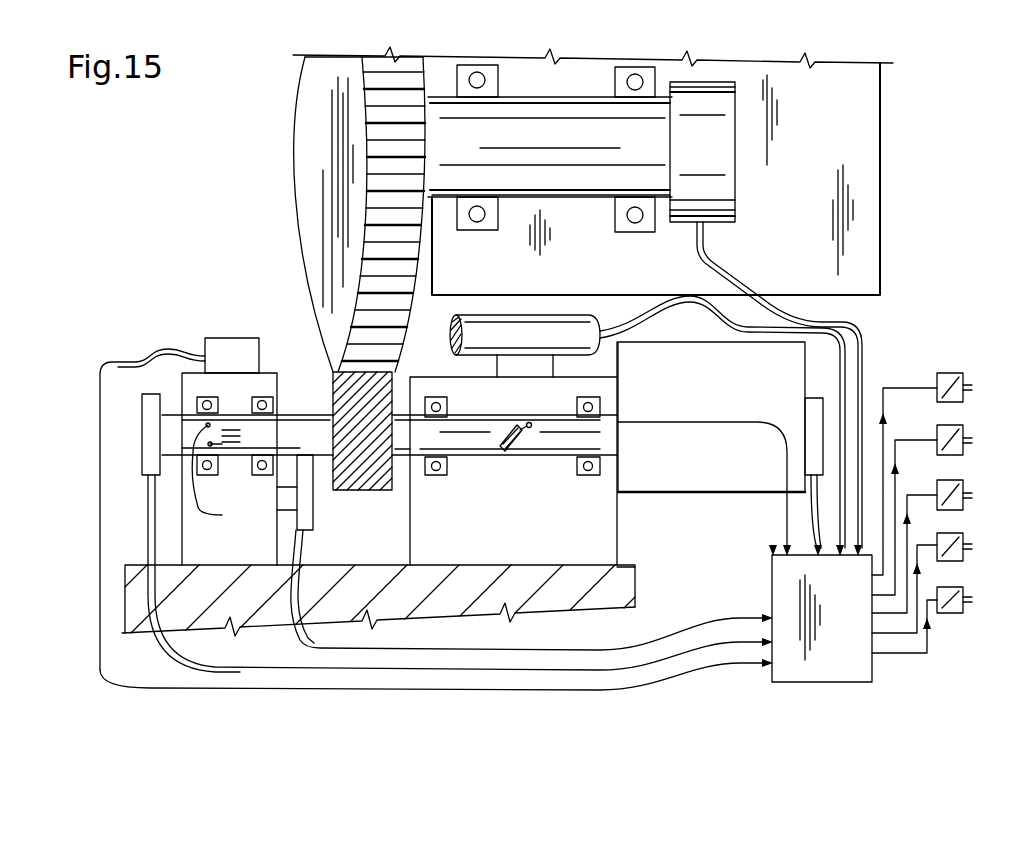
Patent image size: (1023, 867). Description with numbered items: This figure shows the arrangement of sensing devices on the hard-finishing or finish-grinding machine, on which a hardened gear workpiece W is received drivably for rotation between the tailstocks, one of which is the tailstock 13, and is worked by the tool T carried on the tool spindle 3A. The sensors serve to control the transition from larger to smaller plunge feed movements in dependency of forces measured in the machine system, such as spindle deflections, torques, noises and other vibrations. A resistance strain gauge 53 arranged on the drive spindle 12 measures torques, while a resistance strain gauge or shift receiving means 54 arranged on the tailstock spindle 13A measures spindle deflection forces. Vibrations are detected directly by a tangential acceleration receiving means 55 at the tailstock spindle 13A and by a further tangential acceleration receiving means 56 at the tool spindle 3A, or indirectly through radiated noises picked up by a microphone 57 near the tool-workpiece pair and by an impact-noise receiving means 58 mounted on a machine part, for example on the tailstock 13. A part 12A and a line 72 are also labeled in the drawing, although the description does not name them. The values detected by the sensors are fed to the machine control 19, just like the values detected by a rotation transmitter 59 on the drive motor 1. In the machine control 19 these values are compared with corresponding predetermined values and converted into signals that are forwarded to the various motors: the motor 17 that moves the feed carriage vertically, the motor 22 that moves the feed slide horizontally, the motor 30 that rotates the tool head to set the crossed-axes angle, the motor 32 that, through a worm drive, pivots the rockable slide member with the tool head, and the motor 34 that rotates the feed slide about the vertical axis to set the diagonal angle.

The tool spindle 3A is at (585, 177).
The tangential acceleration receiving means 56 is at (702, 135).
The tool T is at (370, 287).
The worm wheel teeth 12A is at (348, 337).
The microphone 57 is at (452, 325).
The impact-noise receiving means 58 is at (236, 350).
The tailstock spindle 13A is at (298, 443).
The workpiece W is at (348, 398).
The tangential acceleration receiving means 55 is at (150, 452).
The resistance strain gauge 54 is at (193, 455).
The signal line 72 is at (773, 548).
The tailstock 13 is at (230, 548).
The drive motor 1 is at (718, 395).
The rotation transmitter 59 is at (813, 440).
The motor 17 is at (945, 373).
The motor 22 is at (950, 440).
The motor 30 is at (950, 495).
The motor 32 is at (950, 547).
The motor 34 is at (950, 602).
The machine control 19 is at (822, 620).
The drive spindle 12 is at (510, 548).
The resistance strain gauge 53 is at (505, 447).